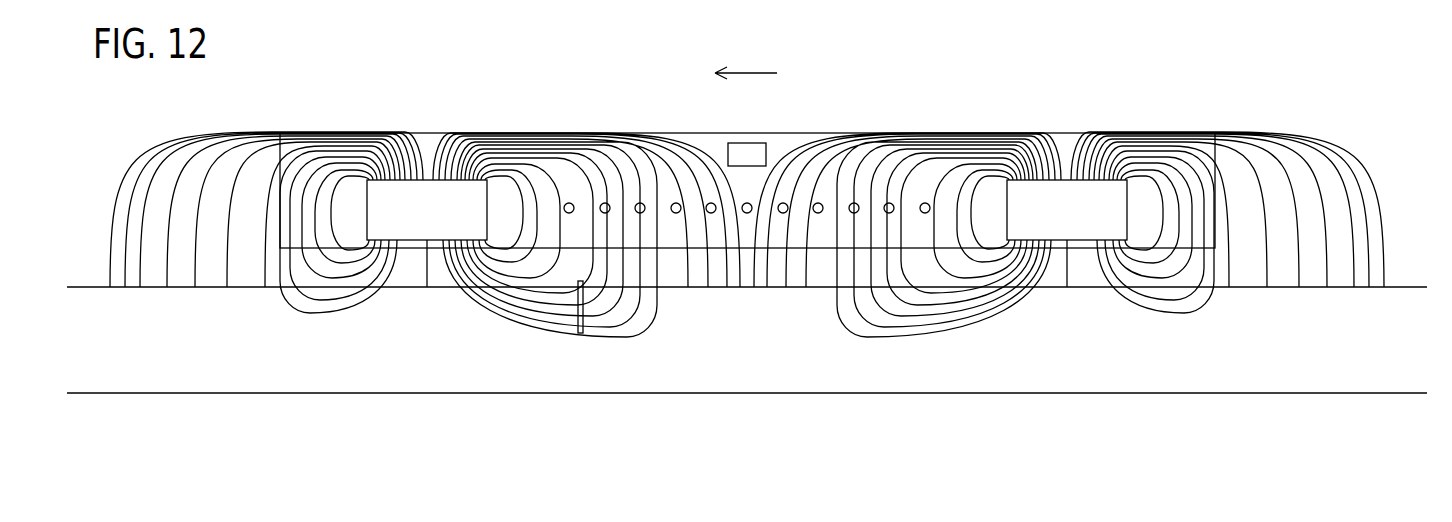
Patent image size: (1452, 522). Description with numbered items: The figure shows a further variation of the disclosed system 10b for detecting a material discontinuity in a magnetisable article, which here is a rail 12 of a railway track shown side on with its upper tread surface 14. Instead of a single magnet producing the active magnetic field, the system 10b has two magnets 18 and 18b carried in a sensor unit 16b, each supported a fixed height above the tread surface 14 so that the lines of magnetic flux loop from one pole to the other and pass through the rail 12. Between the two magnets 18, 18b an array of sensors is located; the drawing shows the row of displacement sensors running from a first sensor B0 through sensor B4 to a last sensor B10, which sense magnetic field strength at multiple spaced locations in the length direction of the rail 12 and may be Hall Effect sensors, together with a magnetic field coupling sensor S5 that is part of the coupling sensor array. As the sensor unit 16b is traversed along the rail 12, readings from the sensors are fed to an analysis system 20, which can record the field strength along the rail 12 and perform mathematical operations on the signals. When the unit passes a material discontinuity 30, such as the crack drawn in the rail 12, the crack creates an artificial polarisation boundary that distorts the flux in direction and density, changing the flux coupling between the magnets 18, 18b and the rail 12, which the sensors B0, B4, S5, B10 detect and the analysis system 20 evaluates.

The system 10b is at (948, 89).
The rail 12 is at (160, 357).
The tread surface 14 is at (1397, 287).
The sensor unit 16b is at (812, 133).
The magnet 18 is at (432, 178).
The magnet 18b is at (1072, 178).
The analysis system 20 is at (747, 143).
The material discontinuity 30 is at (583, 333).
The displacement sensor B0 is at (569, 213).
The displacement sensor B4 is at (694, 284).
The magnetic field coupling sensor S5 is at (711, 213).
The displacement sensor B10 is at (925, 213).